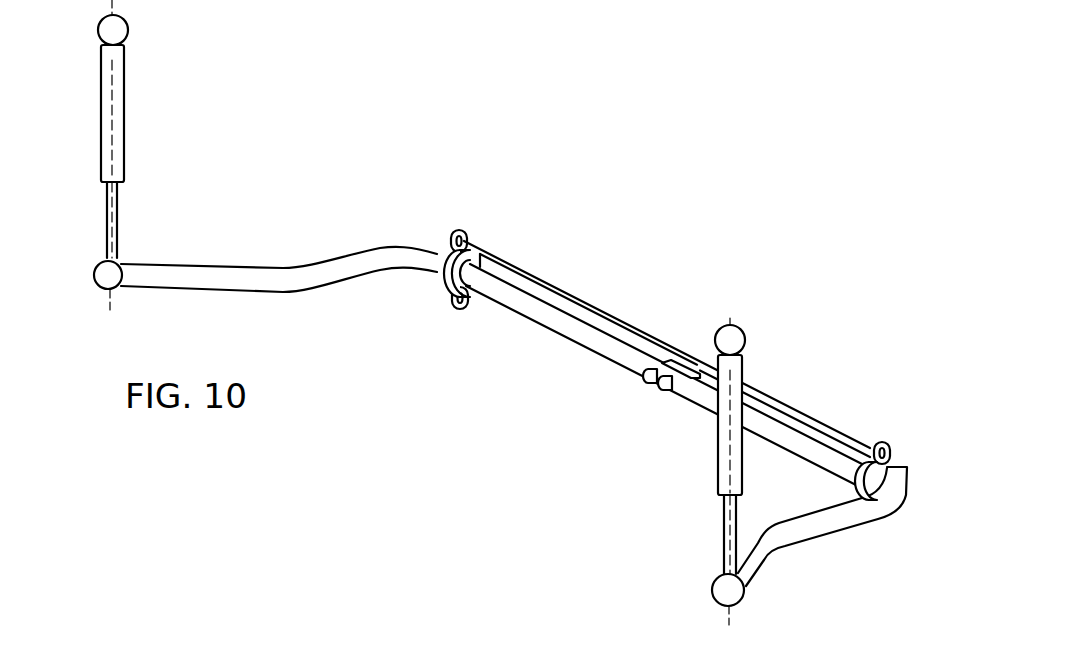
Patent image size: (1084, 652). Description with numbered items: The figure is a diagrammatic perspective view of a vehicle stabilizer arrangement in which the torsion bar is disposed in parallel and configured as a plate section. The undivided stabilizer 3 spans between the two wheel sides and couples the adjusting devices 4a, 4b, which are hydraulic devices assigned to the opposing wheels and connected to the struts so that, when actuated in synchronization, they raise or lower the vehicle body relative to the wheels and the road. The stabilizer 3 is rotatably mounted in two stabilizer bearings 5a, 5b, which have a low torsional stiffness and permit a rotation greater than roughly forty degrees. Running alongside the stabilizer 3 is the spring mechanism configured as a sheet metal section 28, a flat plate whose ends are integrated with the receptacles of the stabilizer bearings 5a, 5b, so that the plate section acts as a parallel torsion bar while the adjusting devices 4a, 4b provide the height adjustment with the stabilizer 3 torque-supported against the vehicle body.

The stabilizer 3 is at (527, 305).
The sheet metal section 28 is at (592, 309).
The adjusting device 4a is at (727, 445).
The adjusting device 4b is at (120, 113).
The stabilizer bearing 5a is at (867, 473).
The stabilizer bearing 5b is at (437, 265).